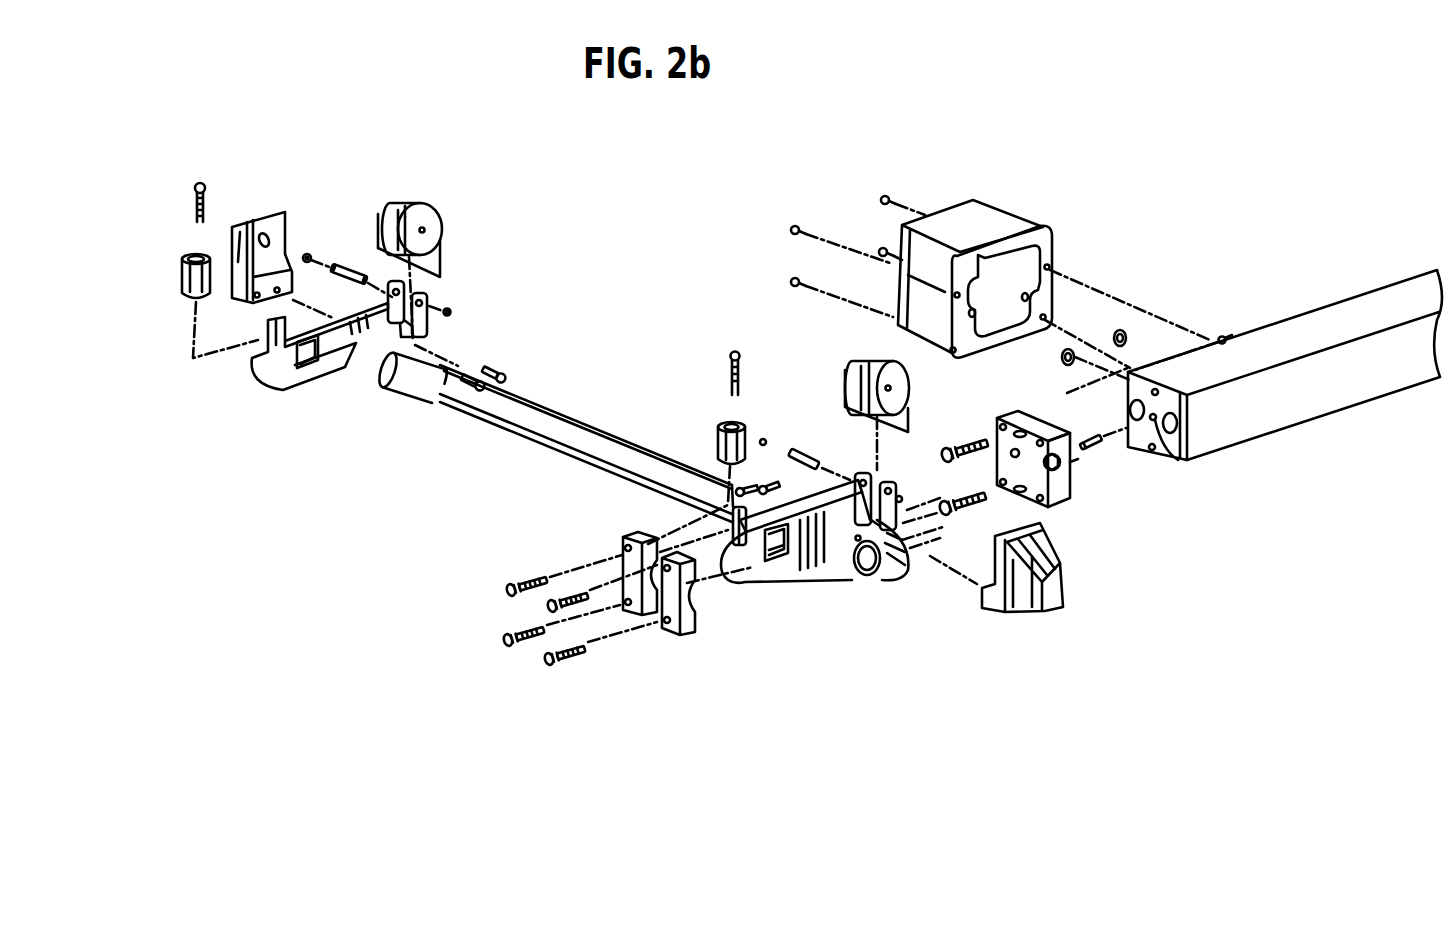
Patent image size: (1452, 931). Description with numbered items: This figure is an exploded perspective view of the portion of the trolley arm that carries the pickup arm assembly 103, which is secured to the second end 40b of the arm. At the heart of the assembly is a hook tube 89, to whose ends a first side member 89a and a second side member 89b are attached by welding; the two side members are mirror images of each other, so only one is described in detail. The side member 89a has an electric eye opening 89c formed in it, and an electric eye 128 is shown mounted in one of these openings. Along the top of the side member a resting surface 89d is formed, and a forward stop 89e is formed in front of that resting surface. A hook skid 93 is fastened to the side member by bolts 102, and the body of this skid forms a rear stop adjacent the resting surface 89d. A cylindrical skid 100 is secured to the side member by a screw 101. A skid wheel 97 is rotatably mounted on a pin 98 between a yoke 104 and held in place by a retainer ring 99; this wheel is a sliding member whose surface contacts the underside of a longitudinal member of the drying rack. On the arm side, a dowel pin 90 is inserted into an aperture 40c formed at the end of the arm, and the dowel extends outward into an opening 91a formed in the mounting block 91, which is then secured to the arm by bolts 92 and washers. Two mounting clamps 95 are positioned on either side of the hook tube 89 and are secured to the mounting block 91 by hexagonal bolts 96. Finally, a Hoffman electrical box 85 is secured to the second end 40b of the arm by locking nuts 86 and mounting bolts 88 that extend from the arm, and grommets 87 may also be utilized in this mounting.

The second end of the arm 40b is at (1218, 436).
The aperture 40c is at (1178, 463).
The Hoffman electrical box 85 is at (1014, 206).
The locking nuts 86 is at (892, 185).
The grommets 87 is at (1126, 322).
The mounting bolts 88 is at (1223, 337).
The hook tube 89 is at (562, 461).
The first side member 89a is at (838, 566).
The second side member 89b is at (272, 381).
The electric eye opening 89c is at (772, 549).
The resting surface 89d is at (857, 478).
The forward stop 89e is at (728, 508).
The dowel pin 90 is at (1098, 448).
The mounting block 91 is at (1064, 508).
The opening 91a is at (1063, 488).
The bolts 92 is at (970, 514).
The hook skid 93 is at (253, 212).
The mounting clamps 95 is at (683, 629).
The hexagonal bolts 96 is at (573, 659).
The skid wheel 97 is at (431, 190).
The pin 98 is at (352, 262).
The retainer ring 99 is at (308, 252).
The cylindrical skid 100 is at (176, 266).
The screw 101 is at (190, 197).
The bolts 102 is at (460, 391).
The pickup arm assembly 103 is at (578, 338).
The yoke 104 is at (421, 333).
The electric eye 128 is at (303, 371).